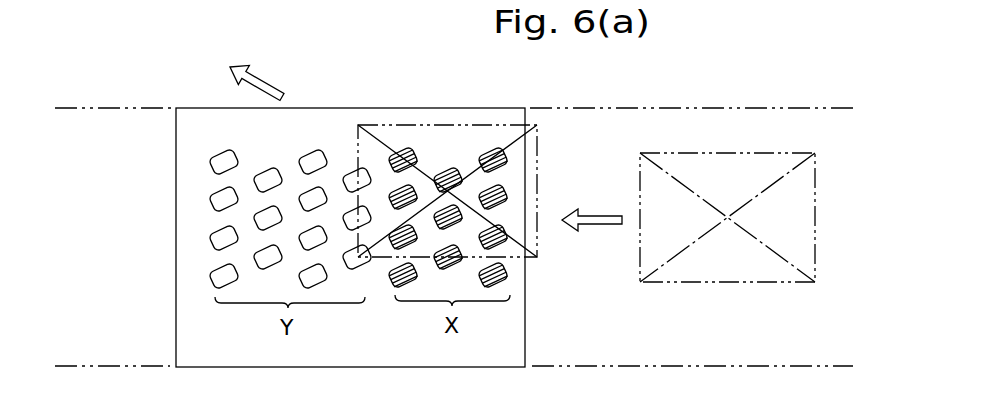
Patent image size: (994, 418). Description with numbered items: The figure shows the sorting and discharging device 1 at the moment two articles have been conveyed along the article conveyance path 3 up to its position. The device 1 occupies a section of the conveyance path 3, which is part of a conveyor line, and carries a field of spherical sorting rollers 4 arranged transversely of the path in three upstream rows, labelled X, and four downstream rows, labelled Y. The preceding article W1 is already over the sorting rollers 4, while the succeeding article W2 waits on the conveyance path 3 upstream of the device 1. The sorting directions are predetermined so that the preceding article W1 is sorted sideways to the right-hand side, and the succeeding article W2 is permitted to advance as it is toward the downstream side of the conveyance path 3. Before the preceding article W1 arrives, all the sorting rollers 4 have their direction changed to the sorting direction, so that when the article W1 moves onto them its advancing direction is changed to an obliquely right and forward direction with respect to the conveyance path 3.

The sorting and discharging device 1 is at (280, 368).
The article conveyance path 3 is at (579, 291).
The spherical sorting rollers 4 is at (211, 198).
The preceding article W1 is at (463, 125).
The succeeding article W2 is at (723, 153).